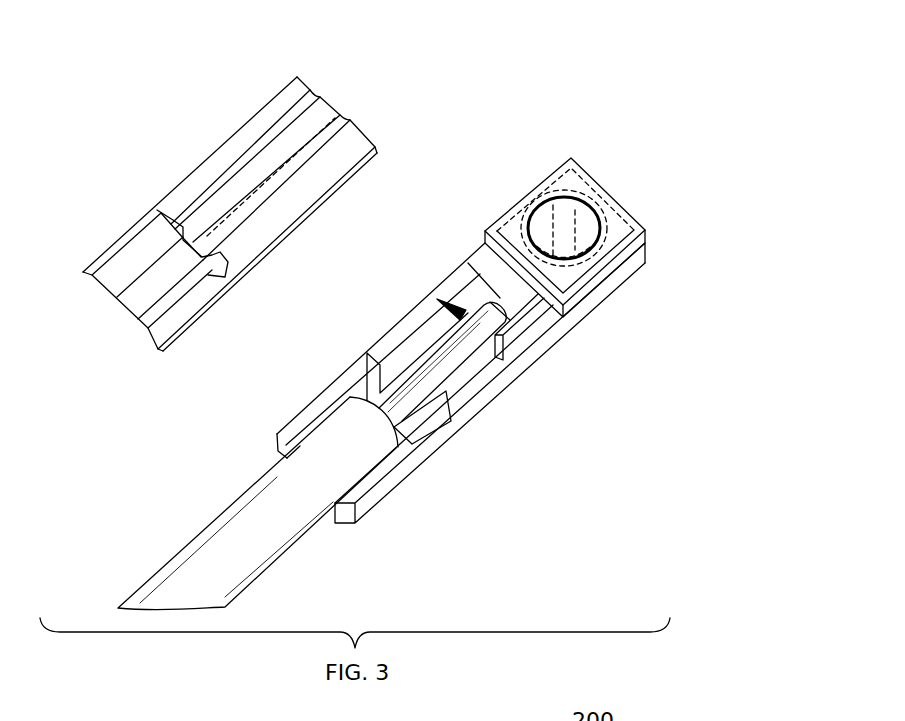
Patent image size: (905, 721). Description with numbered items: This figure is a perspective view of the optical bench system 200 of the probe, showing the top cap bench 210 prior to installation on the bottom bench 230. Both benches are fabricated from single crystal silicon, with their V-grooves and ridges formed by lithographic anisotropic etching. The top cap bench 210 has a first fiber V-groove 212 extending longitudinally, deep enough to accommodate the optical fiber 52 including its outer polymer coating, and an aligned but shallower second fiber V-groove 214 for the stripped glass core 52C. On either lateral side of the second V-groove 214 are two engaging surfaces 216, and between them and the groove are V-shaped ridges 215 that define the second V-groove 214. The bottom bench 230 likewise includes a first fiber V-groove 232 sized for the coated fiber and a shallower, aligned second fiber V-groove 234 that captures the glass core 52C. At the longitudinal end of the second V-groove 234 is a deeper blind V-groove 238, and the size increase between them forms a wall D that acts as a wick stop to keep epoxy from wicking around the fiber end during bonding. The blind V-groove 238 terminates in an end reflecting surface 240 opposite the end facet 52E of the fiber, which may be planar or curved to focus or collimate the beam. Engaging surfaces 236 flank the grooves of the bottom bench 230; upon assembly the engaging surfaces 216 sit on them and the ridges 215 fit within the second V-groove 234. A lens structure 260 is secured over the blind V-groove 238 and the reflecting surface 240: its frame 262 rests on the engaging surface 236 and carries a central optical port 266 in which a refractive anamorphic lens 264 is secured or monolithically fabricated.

The optical bench system 200 is at (483, 46).
The top cap bench 210 is at (98, 244).
The first fiber V-groove 212 is at (115, 277).
The second fiber V-groove 214 is at (252, 174).
The V-shaped ridges 215 is at (222, 234).
The engaging surfaces 216 is at (262, 117).
The bottom bench 230 is at (285, 401).
The first fiber V-groove 232 is at (403, 458).
The second fiber V-groove 234 is at (448, 391).
The engaging surfaces 236 is at (409, 327).
The blind V-groove 238 is at (484, 276).
The end reflecting surface 240 is at (593, 181).
The lens structure 260 is at (538, 169).
The frame 262 is at (503, 211).
The lens 264 is at (576, 245).
The central optical port 266 is at (563, 193).
The optical fiber 52 is at (214, 539).
The glass core 52C is at (420, 371).
The end facet 52E is at (547, 341).
The wall D is at (456, 304).